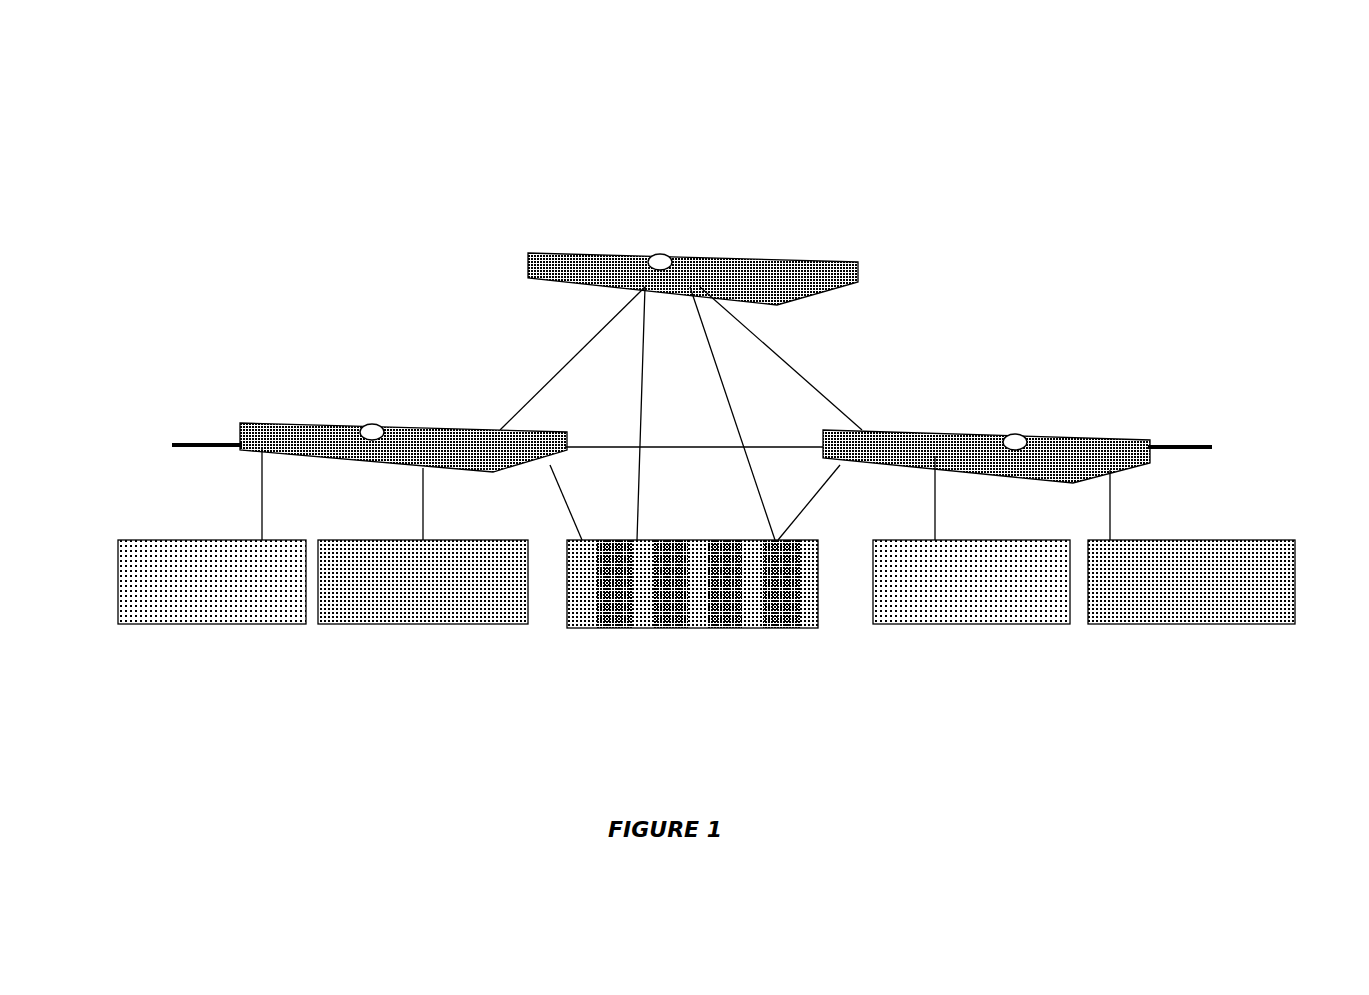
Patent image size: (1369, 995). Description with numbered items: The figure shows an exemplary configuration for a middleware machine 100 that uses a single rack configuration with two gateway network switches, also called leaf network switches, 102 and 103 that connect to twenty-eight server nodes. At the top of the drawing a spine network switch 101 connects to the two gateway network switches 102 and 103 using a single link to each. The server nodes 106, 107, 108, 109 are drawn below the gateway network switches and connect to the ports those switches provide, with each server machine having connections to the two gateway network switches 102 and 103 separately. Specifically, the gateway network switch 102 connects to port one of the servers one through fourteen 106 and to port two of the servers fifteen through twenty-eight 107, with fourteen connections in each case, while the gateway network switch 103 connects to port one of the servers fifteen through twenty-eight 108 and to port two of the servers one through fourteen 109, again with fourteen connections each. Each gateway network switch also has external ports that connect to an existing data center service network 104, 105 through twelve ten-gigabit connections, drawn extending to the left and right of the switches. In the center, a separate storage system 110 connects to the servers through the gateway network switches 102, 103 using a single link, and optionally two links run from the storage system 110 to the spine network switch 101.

The middleware machine 100 is at (152, 88).
The spine network switch 101 is at (752, 247).
The gateway network switch 102 is at (462, 425).
The gateway network switch 103 is at (898, 428).
The existing data center service network 104 is at (153, 430).
The existing data center service network 105 is at (1247, 428).
The servers 1-14 (port 1) 106 is at (188, 623).
The servers 15-28 (port 2) 107 is at (438, 622).
The servers 15-28 (port 1) 108 is at (970, 622).
The servers 1-14 (port 2) 109 is at (1208, 623).
The storage system 110 is at (710, 628).